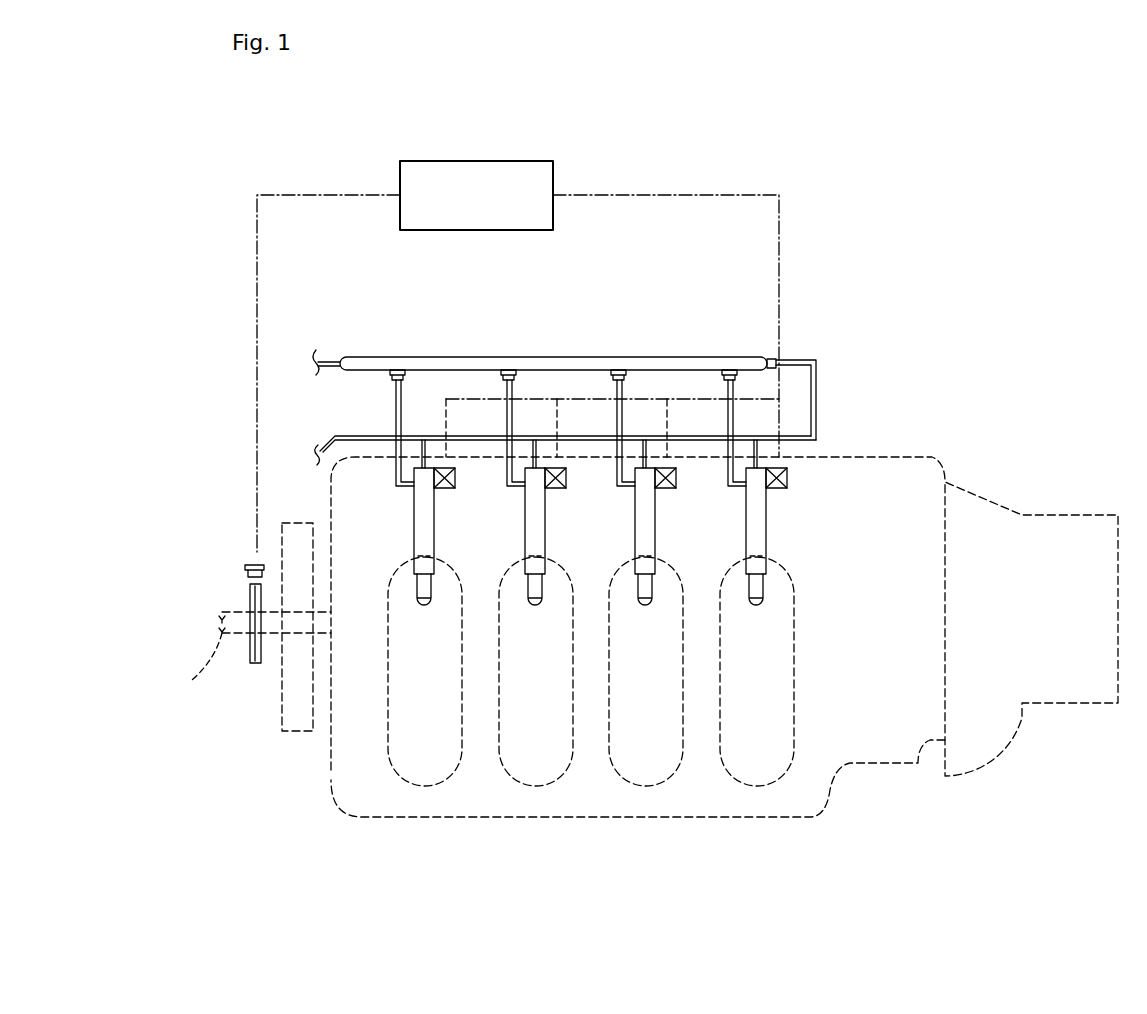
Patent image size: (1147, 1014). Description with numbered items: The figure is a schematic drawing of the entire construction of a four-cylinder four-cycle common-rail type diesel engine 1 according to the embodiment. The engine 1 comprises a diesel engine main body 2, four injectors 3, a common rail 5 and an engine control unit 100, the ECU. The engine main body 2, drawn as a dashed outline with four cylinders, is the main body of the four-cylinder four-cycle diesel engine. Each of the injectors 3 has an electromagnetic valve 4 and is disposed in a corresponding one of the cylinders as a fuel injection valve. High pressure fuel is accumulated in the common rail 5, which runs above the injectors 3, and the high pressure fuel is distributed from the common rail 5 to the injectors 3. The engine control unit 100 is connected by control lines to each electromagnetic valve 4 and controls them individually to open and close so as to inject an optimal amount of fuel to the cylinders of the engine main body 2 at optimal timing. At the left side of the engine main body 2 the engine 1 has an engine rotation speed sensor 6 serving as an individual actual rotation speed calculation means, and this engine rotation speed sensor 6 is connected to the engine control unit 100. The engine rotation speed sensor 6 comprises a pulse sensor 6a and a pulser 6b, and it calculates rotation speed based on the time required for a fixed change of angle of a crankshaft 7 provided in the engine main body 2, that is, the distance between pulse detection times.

The common-rail type diesel engine 1 is at (1057, 170).
The engine main body 2 is at (932, 458).
The injector 3 is at (430, 606).
The electromagnetic valve 4 is at (450, 489).
The common rail 5 is at (578, 357).
The engine rotation speed sensor 6 is at (257, 695).
The pulse sensor 6a is at (245, 568).
The pulser 6b is at (250, 590).
The crankshaft 7 is at (200, 668).
The engine control unit 100 is at (483, 211).